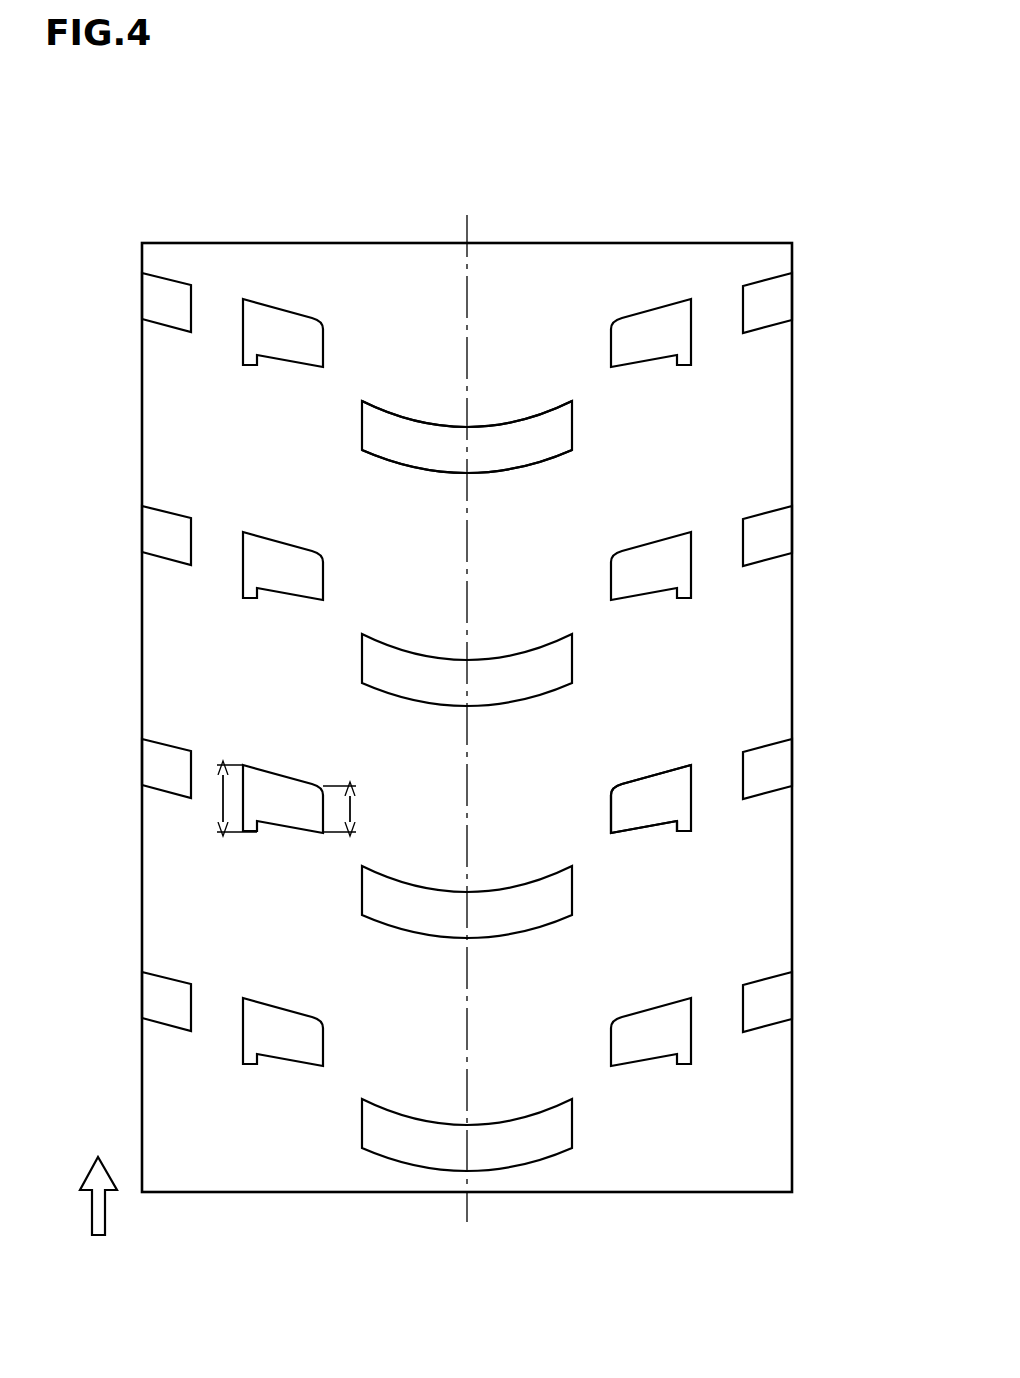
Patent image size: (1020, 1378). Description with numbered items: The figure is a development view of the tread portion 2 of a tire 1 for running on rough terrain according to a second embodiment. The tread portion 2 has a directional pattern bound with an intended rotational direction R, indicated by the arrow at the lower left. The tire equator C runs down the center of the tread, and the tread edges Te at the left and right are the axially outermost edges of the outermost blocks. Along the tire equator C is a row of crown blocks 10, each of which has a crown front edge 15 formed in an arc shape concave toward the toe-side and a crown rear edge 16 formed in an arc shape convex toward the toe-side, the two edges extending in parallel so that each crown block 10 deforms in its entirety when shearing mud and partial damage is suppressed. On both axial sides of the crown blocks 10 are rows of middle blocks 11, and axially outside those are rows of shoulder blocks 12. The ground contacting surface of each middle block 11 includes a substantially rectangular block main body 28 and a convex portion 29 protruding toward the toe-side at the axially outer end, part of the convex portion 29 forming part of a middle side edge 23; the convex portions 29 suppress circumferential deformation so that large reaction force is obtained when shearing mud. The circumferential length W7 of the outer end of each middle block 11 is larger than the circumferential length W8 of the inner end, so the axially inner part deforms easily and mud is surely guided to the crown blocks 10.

The tire 1 is at (575, 238).
The tread portion 2 is at (503, 290).
The crown block 10 is at (522, 443).
The middle block 11 is at (650, 326).
The shoulder block 12 is at (164, 535).
The crown front edge 15 is at (497, 427).
The crown rear edge 16 is at (485, 473).
The middle side edge 23 is at (691, 772).
The block main body 28 is at (660, 797).
The convex portion 29 is at (692, 826).
The tire equator C is at (467, 198).
The tread edge Te is at (141, 295).
The rotational direction R is at (98, 1178).
The length in the tire circumferential direction of the outer end of the middle bloc W7 is at (222, 797).
The length in the tire circumferential direction of the inner end of the middle bloc W8 is at (367, 809).